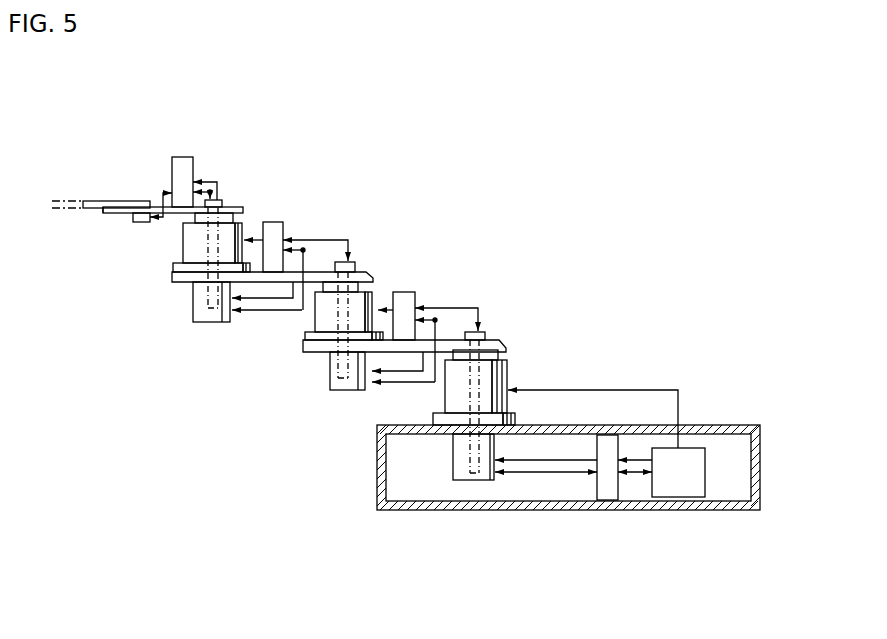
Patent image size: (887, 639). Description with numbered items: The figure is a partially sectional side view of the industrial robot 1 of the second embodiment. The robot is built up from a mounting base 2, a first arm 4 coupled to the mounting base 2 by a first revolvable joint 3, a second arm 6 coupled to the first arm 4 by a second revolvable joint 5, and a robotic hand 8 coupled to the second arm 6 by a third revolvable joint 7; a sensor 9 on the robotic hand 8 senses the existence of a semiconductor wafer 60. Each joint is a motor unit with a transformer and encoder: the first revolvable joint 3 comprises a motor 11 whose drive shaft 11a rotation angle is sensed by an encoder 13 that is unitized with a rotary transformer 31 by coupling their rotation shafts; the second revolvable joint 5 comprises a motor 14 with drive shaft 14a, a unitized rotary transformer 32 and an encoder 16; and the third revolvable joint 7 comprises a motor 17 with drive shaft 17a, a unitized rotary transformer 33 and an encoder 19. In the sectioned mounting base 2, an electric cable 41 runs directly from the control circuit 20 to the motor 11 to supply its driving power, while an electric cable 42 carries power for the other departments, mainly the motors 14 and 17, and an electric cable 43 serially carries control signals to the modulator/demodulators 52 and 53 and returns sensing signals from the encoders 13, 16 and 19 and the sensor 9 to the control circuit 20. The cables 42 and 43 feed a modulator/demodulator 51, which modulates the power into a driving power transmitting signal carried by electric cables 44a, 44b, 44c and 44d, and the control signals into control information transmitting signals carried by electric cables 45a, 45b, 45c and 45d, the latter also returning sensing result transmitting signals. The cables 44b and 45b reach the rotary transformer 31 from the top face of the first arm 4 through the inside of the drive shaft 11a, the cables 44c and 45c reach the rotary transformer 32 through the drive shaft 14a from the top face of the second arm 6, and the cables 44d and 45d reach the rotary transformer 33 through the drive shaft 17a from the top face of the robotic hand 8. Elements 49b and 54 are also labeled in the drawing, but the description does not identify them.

The industrial robot 1 is at (196, 90).
The mounting base 2 is at (493, 511).
The first revolvable joint 3 is at (422, 484).
The first arm 4 is at (444, 384).
The second revolvable joint 5 is at (313, 389).
The second arm 6 is at (302, 284).
The third revolvable joint 7 is at (161, 300).
The robotic hand 8 is at (110, 213).
The sensor 9 is at (140, 222).
The motor 11 is at (455, 403).
The drive shaft 11a is at (506, 349).
The encoder 13 is at (460, 472).
The motor 14 is at (325, 325).
The drive shaft 14a is at (372, 277).
The encoder 16 is at (341, 408).
The motor 17 is at (188, 248).
The drive shaft 17a is at (232, 213).
The encoder 19 is at (189, 316).
The control circuit 20 is at (573, 507).
The rotary transformer 31 is at (432, 511).
The rotary transformer 32 is at (322, 408).
The rotary transformer 33 is at (170, 316).
The electric cable 41 is at (638, 390).
The electric cable 42 is at (643, 508).
The electric cable 43 is at (680, 508).
The electric cable 44a is at (527, 510).
The electric cable 44b is at (478, 309).
The electric cable 44c is at (345, 240).
The electric cable 44d is at (207, 180).
The electric cable 45a is at (573, 510).
The electric cable 45b is at (473, 325).
The electric cable 45c is at (348, 260).
The electric cable 45d is at (216, 195).
The bracket 49b is at (372, 382).
The modulator/demodulator 51 is at (613, 510).
The modulator/demodulator 52 is at (412, 292).
The modulator/demodulator 53 is at (285, 222).
The fourth motor 54 is at (190, 158).
The semiconductor wafer 60 is at (83, 203).